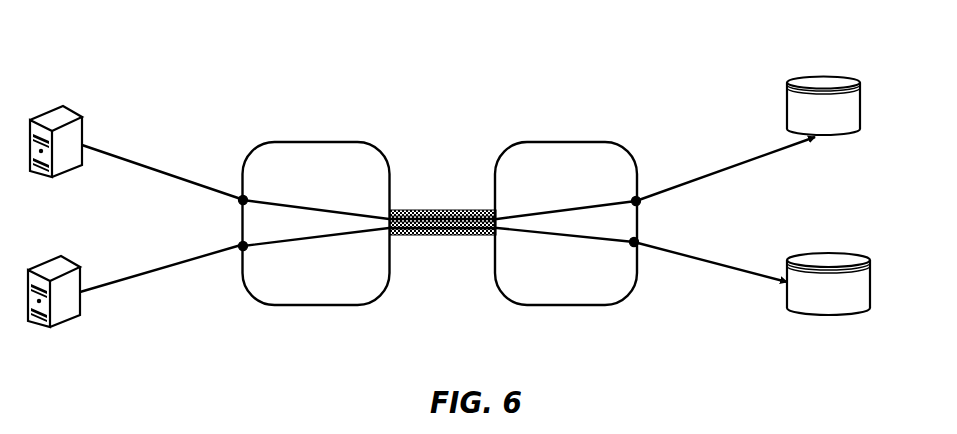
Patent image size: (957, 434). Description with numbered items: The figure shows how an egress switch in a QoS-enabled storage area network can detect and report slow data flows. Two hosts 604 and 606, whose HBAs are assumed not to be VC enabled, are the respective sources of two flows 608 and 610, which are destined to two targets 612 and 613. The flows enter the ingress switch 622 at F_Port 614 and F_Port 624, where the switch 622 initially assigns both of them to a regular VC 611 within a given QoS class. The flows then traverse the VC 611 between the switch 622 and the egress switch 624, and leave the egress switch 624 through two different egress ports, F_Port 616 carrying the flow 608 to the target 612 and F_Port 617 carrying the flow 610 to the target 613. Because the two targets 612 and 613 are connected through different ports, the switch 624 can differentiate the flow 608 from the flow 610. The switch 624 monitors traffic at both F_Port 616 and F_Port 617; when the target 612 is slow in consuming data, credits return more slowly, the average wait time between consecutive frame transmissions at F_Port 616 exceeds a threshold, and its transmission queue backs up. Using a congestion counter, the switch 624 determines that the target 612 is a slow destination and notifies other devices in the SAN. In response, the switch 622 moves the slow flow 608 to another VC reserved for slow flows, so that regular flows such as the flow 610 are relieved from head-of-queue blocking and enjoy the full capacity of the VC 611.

The host 604 is at (50, 100).
The host 606 is at (38, 256).
The flow 608 is at (268, 202).
The flow 610 is at (265, 246).
The regular VC 611 is at (404, 208).
The target 612 is at (886, 76).
The target 613 is at (884, 250).
The F_Port 614 is at (239, 195).
The F_Port 616 is at (639, 194).
The F_Port 617 is at (639, 247).
The switch 622 is at (316, 223).
The switch 624 is at (222, 287).